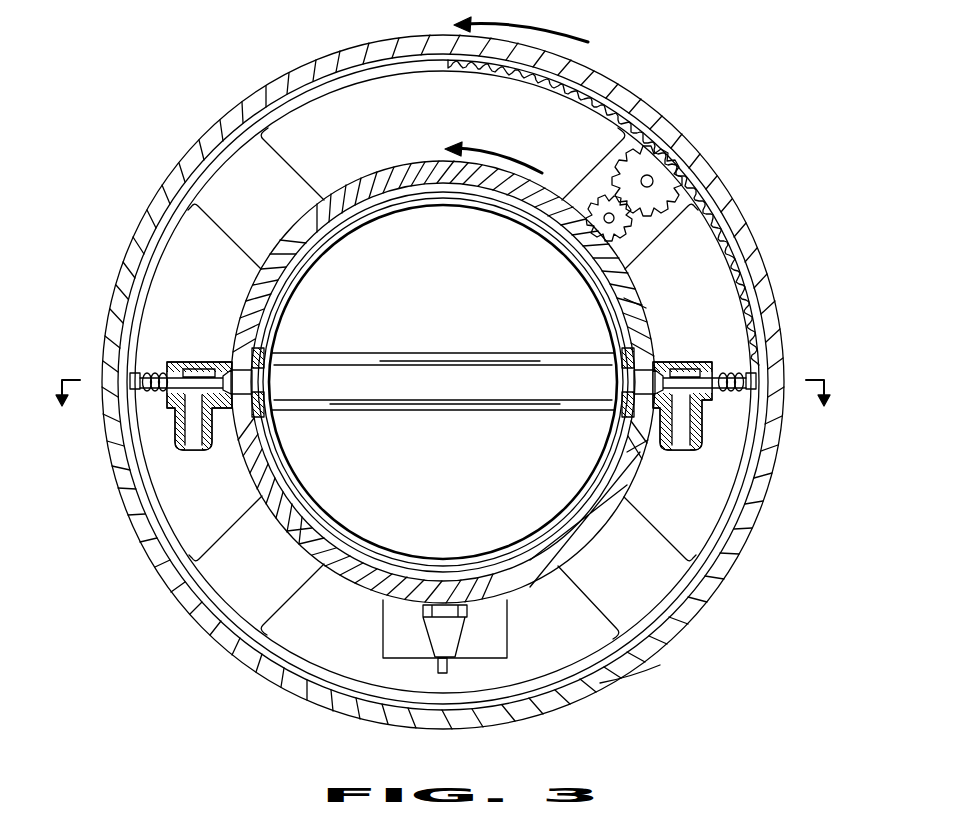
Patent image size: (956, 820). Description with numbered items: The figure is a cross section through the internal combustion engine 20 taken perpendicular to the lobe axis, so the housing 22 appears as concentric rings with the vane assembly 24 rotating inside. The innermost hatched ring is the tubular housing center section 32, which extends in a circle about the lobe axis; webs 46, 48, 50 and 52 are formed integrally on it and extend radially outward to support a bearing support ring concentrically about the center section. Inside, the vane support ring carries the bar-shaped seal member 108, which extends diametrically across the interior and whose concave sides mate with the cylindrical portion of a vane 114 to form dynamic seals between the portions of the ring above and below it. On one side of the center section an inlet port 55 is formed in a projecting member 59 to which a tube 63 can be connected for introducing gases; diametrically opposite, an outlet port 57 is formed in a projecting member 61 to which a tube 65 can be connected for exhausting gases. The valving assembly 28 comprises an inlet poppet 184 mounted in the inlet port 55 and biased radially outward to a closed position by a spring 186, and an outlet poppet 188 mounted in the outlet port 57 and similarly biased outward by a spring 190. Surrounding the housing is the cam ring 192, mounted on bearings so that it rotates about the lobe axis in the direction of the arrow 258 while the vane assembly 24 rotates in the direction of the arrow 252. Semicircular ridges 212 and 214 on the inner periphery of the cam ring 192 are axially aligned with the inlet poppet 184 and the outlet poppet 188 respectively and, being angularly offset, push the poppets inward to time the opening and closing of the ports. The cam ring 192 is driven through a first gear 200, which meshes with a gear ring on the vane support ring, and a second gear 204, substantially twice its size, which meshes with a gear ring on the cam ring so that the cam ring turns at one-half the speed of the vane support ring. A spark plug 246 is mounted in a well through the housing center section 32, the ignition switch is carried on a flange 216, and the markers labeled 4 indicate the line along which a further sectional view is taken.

The internal combustion engine 20 is at (622, 73).
The housing 22 is at (662, 320).
The vane assembly 24 is at (566, 493).
The valving assembly 28 is at (748, 492).
The housing center section 32 is at (624, 490).
The web 46 is at (637, 226).
The web 48 is at (262, 207).
The web 50 is at (262, 582).
The web 52 is at (636, 587).
The inlet port 55 is at (690, 362).
The outlet port 57 is at (226, 368).
The projecting member 59 is at (710, 365).
The projecting member 61 is at (190, 360).
The tube 63 is at (680, 452).
The tube 65 is at (185, 425).
The seal member 108 is at (426, 397).
The vane 114 is at (462, 517).
The inlet poppet 184 is at (756, 381).
The spring 186 is at (733, 392).
The outlet poppet 188 is at (133, 378).
The spring 190 is at (150, 374).
The cam ring 192 is at (364, 50).
The first gear 200 is at (626, 228).
The second gear 204 is at (655, 178).
The ridge 212 is at (636, 662).
The ridge 214 is at (150, 490).
The flange 216 is at (498, 641).
The spark plug 246 is at (460, 645).
The arrow 252 is at (492, 150).
The arrow 258 is at (521, 26).
The section line 4- 4 is at (443, 404).